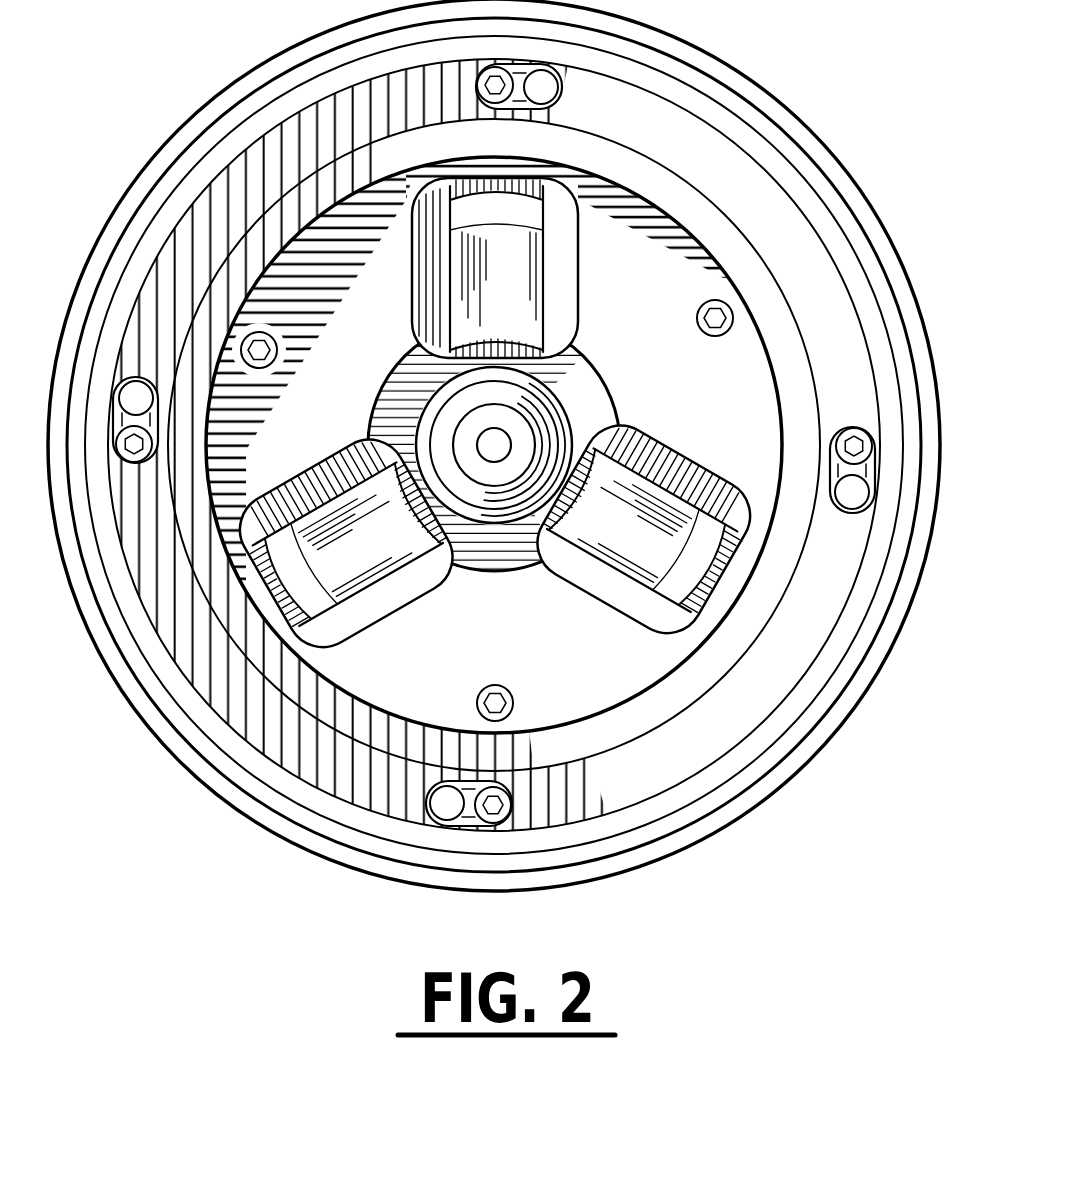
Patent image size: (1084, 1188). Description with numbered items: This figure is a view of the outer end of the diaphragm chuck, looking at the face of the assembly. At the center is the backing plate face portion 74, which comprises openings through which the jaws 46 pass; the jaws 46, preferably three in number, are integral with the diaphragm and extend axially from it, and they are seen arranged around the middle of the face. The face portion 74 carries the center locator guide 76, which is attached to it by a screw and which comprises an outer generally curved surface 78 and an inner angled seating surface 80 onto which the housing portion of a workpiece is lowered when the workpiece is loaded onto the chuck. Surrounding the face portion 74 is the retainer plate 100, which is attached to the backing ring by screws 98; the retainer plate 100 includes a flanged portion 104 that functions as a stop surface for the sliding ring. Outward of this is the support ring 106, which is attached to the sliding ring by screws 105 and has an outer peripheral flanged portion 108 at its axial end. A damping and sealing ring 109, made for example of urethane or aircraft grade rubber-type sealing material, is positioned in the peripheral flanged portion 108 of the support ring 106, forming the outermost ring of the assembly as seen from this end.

The jaws 46 is at (528, 282).
The face portion 74 is at (397, 405).
The center locator guide 76 is at (523, 442).
The outer generally curved surface 78 is at (538, 420).
The inner angled seating surface 80 is at (557, 400).
The screws 98 is at (278, 343).
The retainer plate 100 is at (445, 699).
The flanged portion 104 is at (735, 236).
The screws 105 is at (850, 422).
The support ring 106 is at (715, 707).
The outer peripheral flanged portion 108 is at (886, 533).
The damping and sealing ring 109 is at (818, 738).